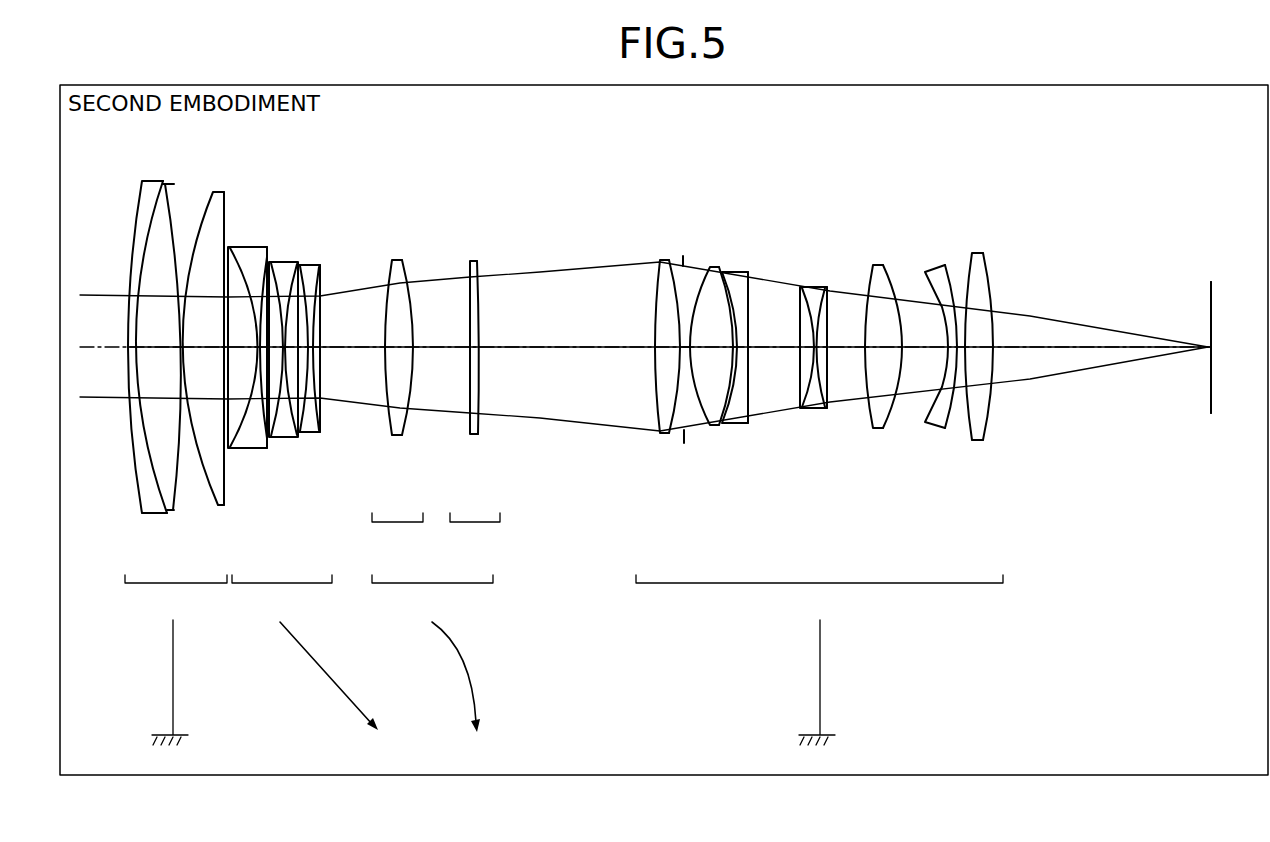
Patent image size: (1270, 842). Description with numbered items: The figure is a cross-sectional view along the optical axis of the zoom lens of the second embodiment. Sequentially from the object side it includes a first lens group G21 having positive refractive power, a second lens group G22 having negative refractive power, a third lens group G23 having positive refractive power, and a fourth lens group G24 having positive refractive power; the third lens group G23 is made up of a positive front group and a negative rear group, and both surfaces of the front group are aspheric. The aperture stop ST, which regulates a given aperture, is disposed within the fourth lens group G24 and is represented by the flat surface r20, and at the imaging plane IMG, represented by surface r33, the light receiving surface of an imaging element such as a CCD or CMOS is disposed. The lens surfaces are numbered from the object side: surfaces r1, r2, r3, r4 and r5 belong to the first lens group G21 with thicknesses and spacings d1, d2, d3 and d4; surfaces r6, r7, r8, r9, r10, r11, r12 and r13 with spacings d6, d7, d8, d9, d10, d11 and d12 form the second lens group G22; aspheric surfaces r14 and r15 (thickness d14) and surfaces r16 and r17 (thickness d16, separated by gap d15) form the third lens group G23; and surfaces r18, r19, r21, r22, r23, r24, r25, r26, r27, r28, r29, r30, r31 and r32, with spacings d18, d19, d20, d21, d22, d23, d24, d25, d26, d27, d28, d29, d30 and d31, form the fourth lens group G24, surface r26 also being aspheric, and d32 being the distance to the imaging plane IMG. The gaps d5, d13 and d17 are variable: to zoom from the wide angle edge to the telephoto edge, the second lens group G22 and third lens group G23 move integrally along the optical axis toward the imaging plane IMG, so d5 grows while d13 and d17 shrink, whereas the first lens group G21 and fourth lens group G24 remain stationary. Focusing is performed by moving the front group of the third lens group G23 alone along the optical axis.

The first lens surface r1 is at (132, 247).
The second lens surface r2 is at (148, 227).
The third lens surface r3 is at (172, 205).
The fourth lens surface r4 is at (198, 232).
The fifth lens surface r5 is at (217, 193).
The sixth lens surface r6 is at (238, 247).
The seventh lens surface r7 is at (244, 262).
The eighth lens surface r8 is at (265, 257).
The ninth lens surface r9 is at (288, 265).
The tenth lens surface r10 is at (300, 275).
The eleventh lens surface r11 is at (316, 283).
The twelfth lens surface r12 is at (318, 310).
The thirteenth lens surface r13 is at (321, 336).
The fourteenth lens surface r14 is at (388, 273).
The fifteenth lens surface r15 is at (413, 327).
The sixteenth lens surface r16 is at (470, 273).
The seventeenth lens surface r17 is at (480, 320).
The eighteenth lens surface r18 is at (655, 330).
The nineteenth lens surface r19 is at (672, 303).
The aperture stop surface r20 is at (687, 263).
The twenty-first lens surface r21 is at (712, 272).
The twenty-second lens surface r22 is at (727, 282).
The twenty-third lens surface r23 is at (746, 327).
The twenty-fourth lens surface r24 is at (802, 308).
The twenty-fifth lens surface r25 is at (810, 287).
The twenty-sixth lens surface r26 is at (838, 320).
The twenty-seventh lens surface r27 is at (872, 282).
The twenty-eighth lens surface r28 is at (918, 323).
The twenty-ninth lens surface r29 is at (928, 272).
The thirtieth lens surface r30 is at (947, 272).
The thirty-first lens surface r31 is at (974, 268).
The thirty-second lens surface r32 is at (989, 291).
The imaging plane surface r33 is at (1212, 303).
The first lens thickness d1 is at (130, 350).
The second lens thickness d2 is at (157, 350).
The third surface distance d3 is at (178, 350).
The third lens thickness d4 is at (202, 350).
The first variable distance d5 is at (225, 352).
The fourth lens thickness d6 is at (242, 352).
The fifth lens thickness d7 is at (259, 352).
The eighth surface distance d8 is at (272, 352).
The sixth lens thickness d9 is at (284, 352).
The seventh lens thickness d10 is at (292, 352).
The eleventh surface distance d11 is at (305, 352).
The eighth lens thickness d12 is at (316, 352).
The second variable distance d13 is at (355, 349).
The ninth lens thickness d14 is at (399, 352).
The fifteenth surface distance d15 is at (440, 349).
The tenth lens thickness d16 is at (480, 352).
The third variable distance d17 is at (570, 349).
The eleventh lens thickness d18 is at (667, 350).
The nineteenth surface distance d19 is at (667, 362).
The aperture stop distance d20 is at (689, 350).
The twelfth lens thickness d21 is at (712, 350).
The thirteenth lens thickness d22 is at (743, 350).
The twenty-third surface distance d23 is at (775, 349).
The fourteenth lens thickness d24 is at (806, 350).
The fifteenth lens thickness d25 is at (819, 350).
The twenty-sixth surface distance d26 is at (842, 349).
The sixteenth lens thickness d27 is at (883, 350).
The twenty-eighth surface distance d28 is at (927, 350).
The seventeenth lens thickness d29 is at (953, 350).
The thirtieth surface distance d30 is at (962, 352).
The eighteenth lens thickness d31 is at (979, 352).
The back focal distance d32 is at (1083, 349).
The aperture stop ST is at (678, 251).
The imaging plane IMG is at (1212, 390).
The first lens group G21 is at (176, 660).
The second lens group G22 is at (305, 652).
The third lens group G23 is at (432, 653).
The fourth lens group G24 is at (819, 660).